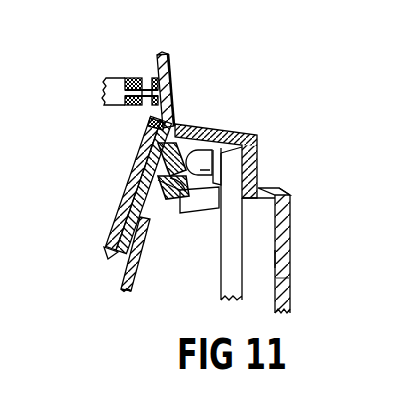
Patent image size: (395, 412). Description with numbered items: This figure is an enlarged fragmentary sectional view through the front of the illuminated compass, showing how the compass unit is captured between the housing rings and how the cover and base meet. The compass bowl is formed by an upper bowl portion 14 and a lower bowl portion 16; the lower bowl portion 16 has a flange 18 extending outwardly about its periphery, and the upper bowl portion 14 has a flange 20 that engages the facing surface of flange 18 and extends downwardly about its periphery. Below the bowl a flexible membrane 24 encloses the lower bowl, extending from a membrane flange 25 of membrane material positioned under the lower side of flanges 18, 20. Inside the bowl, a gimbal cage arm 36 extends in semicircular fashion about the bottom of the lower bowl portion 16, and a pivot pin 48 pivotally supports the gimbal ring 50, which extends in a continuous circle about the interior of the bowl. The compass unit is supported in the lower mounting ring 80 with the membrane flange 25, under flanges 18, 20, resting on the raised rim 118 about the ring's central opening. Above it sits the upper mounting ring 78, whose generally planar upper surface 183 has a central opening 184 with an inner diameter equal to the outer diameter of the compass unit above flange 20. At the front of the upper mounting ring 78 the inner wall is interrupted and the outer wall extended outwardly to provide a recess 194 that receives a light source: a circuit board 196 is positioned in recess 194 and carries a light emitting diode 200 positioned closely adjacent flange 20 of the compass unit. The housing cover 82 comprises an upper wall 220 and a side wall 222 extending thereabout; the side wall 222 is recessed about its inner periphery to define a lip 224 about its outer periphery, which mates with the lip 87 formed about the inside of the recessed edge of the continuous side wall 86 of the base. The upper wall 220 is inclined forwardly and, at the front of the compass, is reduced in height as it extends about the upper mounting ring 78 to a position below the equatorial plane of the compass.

The upper bowl portion 14 is at (172, 55).
The flange 20 is at (174, 122).
The pivot pin 48 is at (112, 78).
The gimbal ring 50 is at (106, 97).
The central opening 184 is at (150, 122).
The flange 18 is at (148, 141).
The gimbal cage arm 36 is at (115, 235).
The lower bowl portion 16 is at (122, 283).
The flexible membrane 24 is at (128, 289).
The membrane flange 25 is at (192, 178).
The raised rim 118 is at (172, 206).
The lower mounting ring 80 is at (203, 212).
The upper surface 183 is at (185, 125).
The upper mounting ring 78 is at (262, 150).
The recess 194 is at (212, 160).
The light emitting diode 200 is at (236, 124).
The circuit board 196 is at (225, 266).
The lip 87 is at (276, 260).
The upper wall 220 is at (286, 190).
The side wall 222 is at (292, 207).
The cover 82 is at (298, 231).
The lip 224 is at (292, 281).
The side wall 86 is at (300, 298).